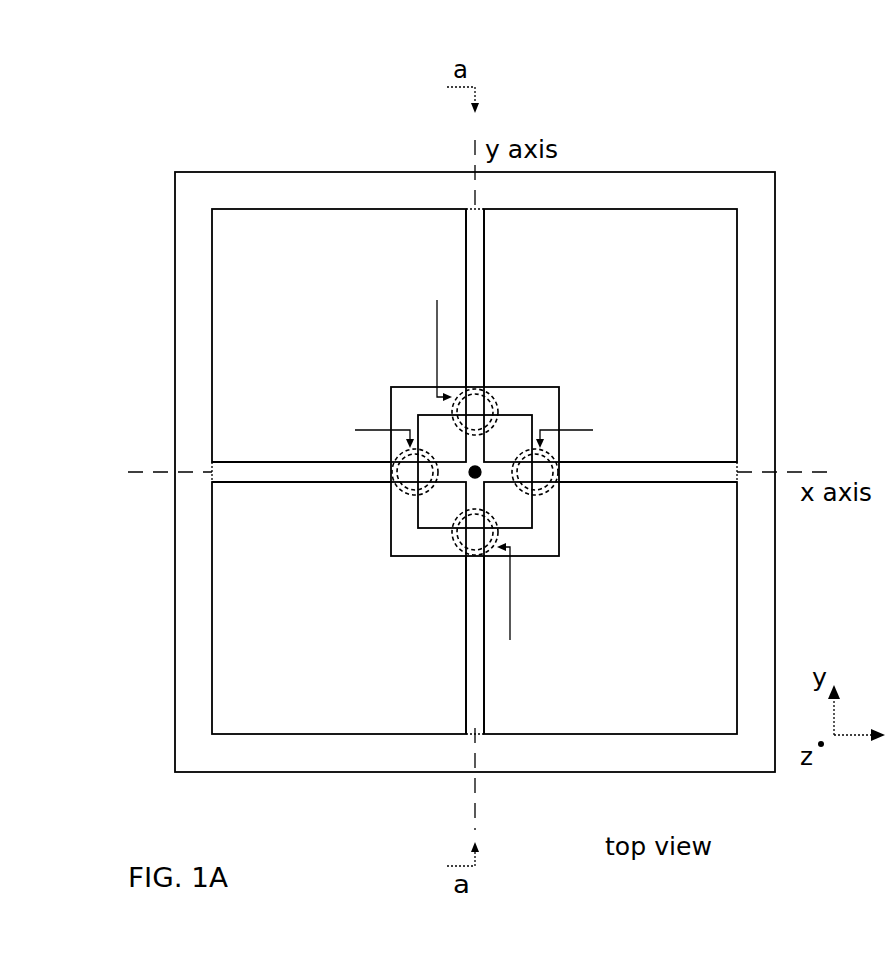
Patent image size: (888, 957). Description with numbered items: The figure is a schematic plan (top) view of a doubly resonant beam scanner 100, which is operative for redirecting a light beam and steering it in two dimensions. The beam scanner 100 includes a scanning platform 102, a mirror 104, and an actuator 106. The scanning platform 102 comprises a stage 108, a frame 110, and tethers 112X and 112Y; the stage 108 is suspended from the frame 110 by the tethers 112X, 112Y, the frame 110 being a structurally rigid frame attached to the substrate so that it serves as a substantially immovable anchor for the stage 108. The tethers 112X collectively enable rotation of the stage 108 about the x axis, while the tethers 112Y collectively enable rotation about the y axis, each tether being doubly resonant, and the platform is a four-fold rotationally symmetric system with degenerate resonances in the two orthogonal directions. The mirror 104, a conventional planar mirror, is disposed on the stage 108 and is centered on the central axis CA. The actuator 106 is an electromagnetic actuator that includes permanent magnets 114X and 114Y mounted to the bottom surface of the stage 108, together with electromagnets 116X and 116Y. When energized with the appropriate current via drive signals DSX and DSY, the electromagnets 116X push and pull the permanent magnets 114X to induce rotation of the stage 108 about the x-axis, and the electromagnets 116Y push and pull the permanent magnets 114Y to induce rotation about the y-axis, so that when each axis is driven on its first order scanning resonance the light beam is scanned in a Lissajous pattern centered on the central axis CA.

The beam scanner 100 is at (188, 131).
The scanning platform 102 is at (380, 128).
The mirror 104 is at (532, 420).
The actuator 106 is at (362, 605).
The stage 108 is at (418, 398).
The frame 110 is at (653, 192).
The tethers 112X is at (267, 472).
The tethers 112Y is at (467, 242).
The permanent magnets 114X is at (542, 482).
The permanent magnets 114Y is at (392, 492).
The electromagnets 116X is at (503, 390).
The electromagnets 116Y is at (412, 495).
The central axis CA is at (477, 470).
The drive signal DSX is at (477, 472).
The drive signal DSY is at (474, 431).